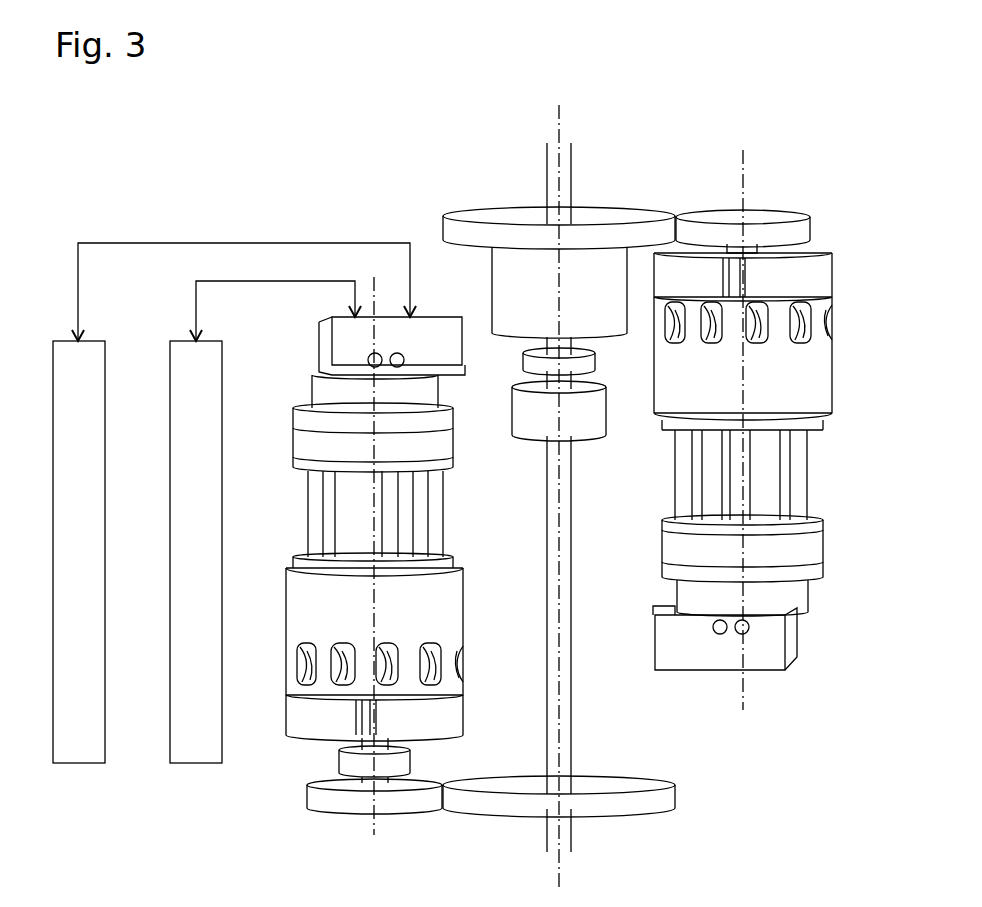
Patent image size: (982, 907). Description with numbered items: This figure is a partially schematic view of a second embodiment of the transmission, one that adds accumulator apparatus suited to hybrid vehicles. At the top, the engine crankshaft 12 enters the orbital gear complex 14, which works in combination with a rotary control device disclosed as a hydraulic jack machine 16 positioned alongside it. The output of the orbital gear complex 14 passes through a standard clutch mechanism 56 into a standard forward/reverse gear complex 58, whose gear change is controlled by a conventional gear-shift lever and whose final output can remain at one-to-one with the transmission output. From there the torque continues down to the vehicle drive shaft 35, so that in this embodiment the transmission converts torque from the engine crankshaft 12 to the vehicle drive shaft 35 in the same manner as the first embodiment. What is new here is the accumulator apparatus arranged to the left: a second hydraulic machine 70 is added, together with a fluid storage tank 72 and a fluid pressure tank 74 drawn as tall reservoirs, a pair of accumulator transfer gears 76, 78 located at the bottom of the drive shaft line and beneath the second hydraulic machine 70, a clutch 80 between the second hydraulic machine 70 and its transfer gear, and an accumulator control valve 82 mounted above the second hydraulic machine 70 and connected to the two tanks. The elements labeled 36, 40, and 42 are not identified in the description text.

The crankshaft 12 is at (565, 172).
The orbital gear complex 14 is at (510, 284).
The hydraulic jack machine 16 is at (818, 378).
The vehicle drive shaft 35 is at (572, 684).
The upper disc 36 is at (508, 213).
The right disc 40 is at (763, 213).
The key 42 is at (736, 247).
The clutch mechanism 56 is at (591, 364).
The forward/reverse gear complex 58 is at (592, 420).
The second hydraulic machine 70 is at (307, 613).
The fluid storage tank 72 is at (196, 552).
The fluid pressure tank 74 is at (79, 552).
The accumulator transfer gear 76 is at (656, 803).
The accumulator transfer gear 78 is at (334, 800).
The clutch 80 is at (346, 762).
The accumulator control valve 82 is at (346, 346).